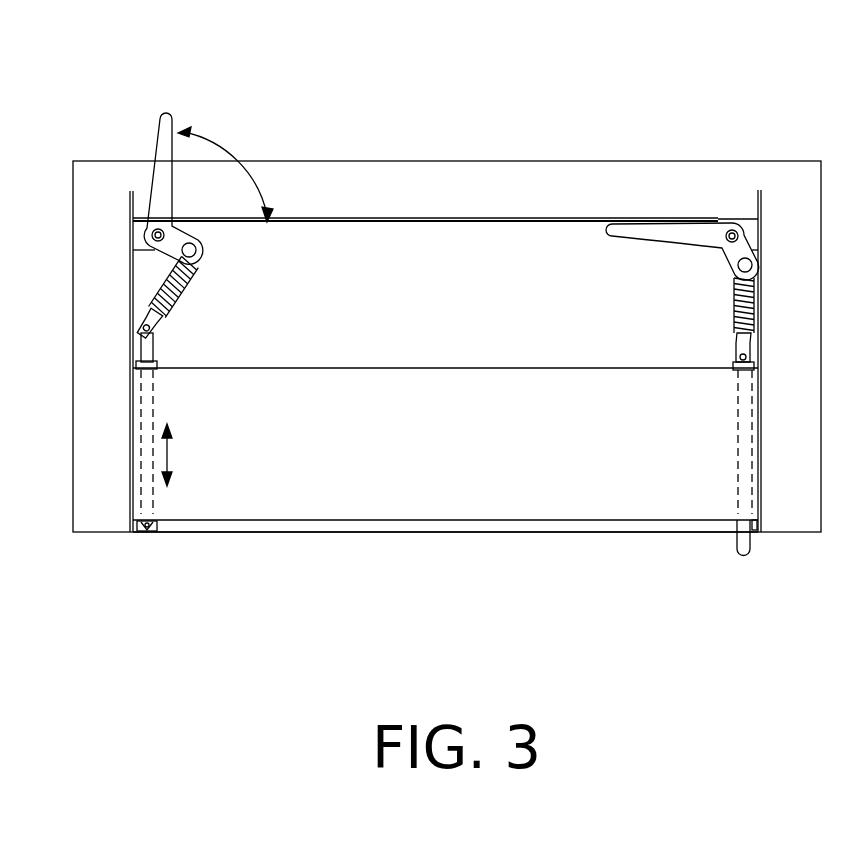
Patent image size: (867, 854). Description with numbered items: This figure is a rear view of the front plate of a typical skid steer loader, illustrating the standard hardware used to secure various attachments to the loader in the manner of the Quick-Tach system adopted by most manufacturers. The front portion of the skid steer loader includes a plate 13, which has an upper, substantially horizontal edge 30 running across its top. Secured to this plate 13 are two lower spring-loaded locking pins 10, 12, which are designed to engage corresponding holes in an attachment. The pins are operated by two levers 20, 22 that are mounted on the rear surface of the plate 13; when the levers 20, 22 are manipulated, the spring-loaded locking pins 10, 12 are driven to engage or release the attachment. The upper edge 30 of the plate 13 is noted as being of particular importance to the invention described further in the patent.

The lower spring-loaded locking pin 10 is at (147, 532).
The lower spring-loaded locking pin 12 is at (752, 540).
The plate 13 is at (433, 475).
The lever 20 is at (165, 117).
The lever 22 is at (643, 217).
The upper, substantially horizontal edge 30 is at (372, 160).